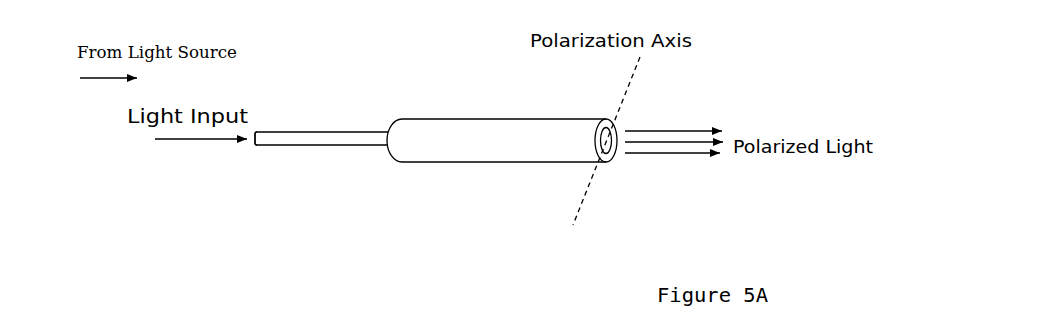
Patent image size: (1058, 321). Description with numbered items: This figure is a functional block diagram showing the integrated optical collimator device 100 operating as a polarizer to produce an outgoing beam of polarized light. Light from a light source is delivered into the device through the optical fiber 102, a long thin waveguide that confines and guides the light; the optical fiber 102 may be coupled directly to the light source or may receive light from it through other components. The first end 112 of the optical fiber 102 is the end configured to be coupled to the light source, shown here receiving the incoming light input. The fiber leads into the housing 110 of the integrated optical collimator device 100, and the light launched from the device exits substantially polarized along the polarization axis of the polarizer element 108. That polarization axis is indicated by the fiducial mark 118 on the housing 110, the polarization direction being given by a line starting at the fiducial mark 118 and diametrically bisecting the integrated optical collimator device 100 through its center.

The integrated optical collimator device 100 is at (457, 136).
The optical fiber 102 is at (317, 131).
The polarizer element 108 is at (612, 150).
The housing 110 is at (470, 153).
The first end 112 is at (257, 146).
The fiducial mark 118 is at (605, 153).